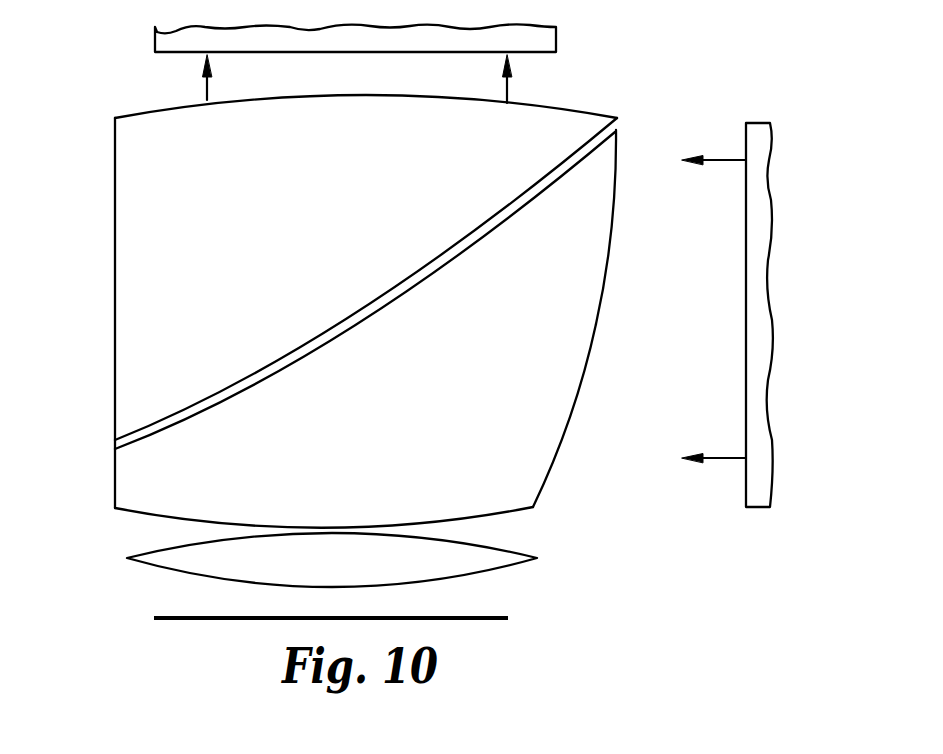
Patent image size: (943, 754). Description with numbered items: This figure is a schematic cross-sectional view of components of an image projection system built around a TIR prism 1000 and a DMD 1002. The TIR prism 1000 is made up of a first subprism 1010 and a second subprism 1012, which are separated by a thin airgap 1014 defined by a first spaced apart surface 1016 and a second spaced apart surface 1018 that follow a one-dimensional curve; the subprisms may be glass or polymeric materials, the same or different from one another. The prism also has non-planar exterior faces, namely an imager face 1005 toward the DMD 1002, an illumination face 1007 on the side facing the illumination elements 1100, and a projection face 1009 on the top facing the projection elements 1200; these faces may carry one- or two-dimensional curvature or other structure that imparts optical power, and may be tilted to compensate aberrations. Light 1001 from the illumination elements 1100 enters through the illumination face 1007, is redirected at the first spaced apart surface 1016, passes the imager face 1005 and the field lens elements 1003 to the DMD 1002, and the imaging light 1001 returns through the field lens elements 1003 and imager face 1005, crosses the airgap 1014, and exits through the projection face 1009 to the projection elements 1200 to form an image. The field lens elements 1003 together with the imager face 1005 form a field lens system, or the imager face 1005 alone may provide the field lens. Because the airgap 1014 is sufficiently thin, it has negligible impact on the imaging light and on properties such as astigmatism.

The TIR prism 1000 is at (352, 292).
The light 1001 is at (208, 89).
The DMD 1002 is at (195, 620).
The field lens elements 1003 is at (160, 560).
The imager face 1005 is at (515, 510).
The illumination face 1007 is at (582, 393).
The projection face 1009 is at (130, 118).
The first subprism 1010 is at (598, 228).
The second subprism 1012 is at (128, 311).
The airgap 1014 is at (312, 312).
The first spaced apart surface 1016 is at (137, 447).
The second spaced apart surface 1018 is at (140, 432).
The illumination elements 1100 is at (751, 313).
The projection elements 1200 is at (540, 33).